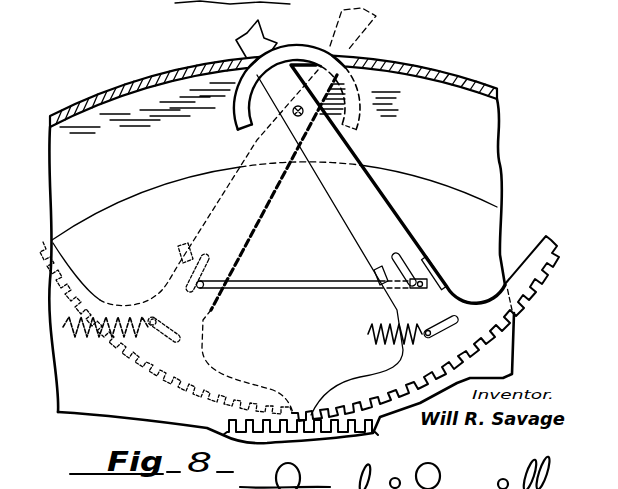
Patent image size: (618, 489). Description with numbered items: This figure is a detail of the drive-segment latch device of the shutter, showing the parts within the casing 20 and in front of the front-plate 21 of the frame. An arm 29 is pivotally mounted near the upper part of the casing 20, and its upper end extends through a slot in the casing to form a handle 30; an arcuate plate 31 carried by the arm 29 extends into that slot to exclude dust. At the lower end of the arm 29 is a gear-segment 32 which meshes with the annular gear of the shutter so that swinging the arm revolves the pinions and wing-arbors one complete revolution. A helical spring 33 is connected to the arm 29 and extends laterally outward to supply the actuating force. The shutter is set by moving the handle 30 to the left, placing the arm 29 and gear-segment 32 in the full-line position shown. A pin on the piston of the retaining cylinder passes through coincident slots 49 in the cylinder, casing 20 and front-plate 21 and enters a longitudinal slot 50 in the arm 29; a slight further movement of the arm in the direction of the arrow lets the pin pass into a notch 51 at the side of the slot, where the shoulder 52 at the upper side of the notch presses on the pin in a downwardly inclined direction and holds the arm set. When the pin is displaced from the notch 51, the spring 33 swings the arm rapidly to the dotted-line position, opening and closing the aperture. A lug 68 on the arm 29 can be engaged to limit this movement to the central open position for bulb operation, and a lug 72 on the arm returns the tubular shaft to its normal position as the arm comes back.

The casing 20 is at (490, 161).
The front-plate 21 is at (493, 242).
The arm 29 is at (346, 226).
The handle 30 is at (250, 36).
The arcuate plate 31 is at (240, 104).
The gear-segment 32 is at (522, 314).
The helical spring 33 is at (366, 334).
The slots 49 is at (314, 284).
The longitudinal slot 50 is at (396, 256).
The notch 51 is at (418, 306).
The shoulder 52 is at (416, 279).
The lug 68 is at (373, 273).
The lug 72 is at (437, 272).